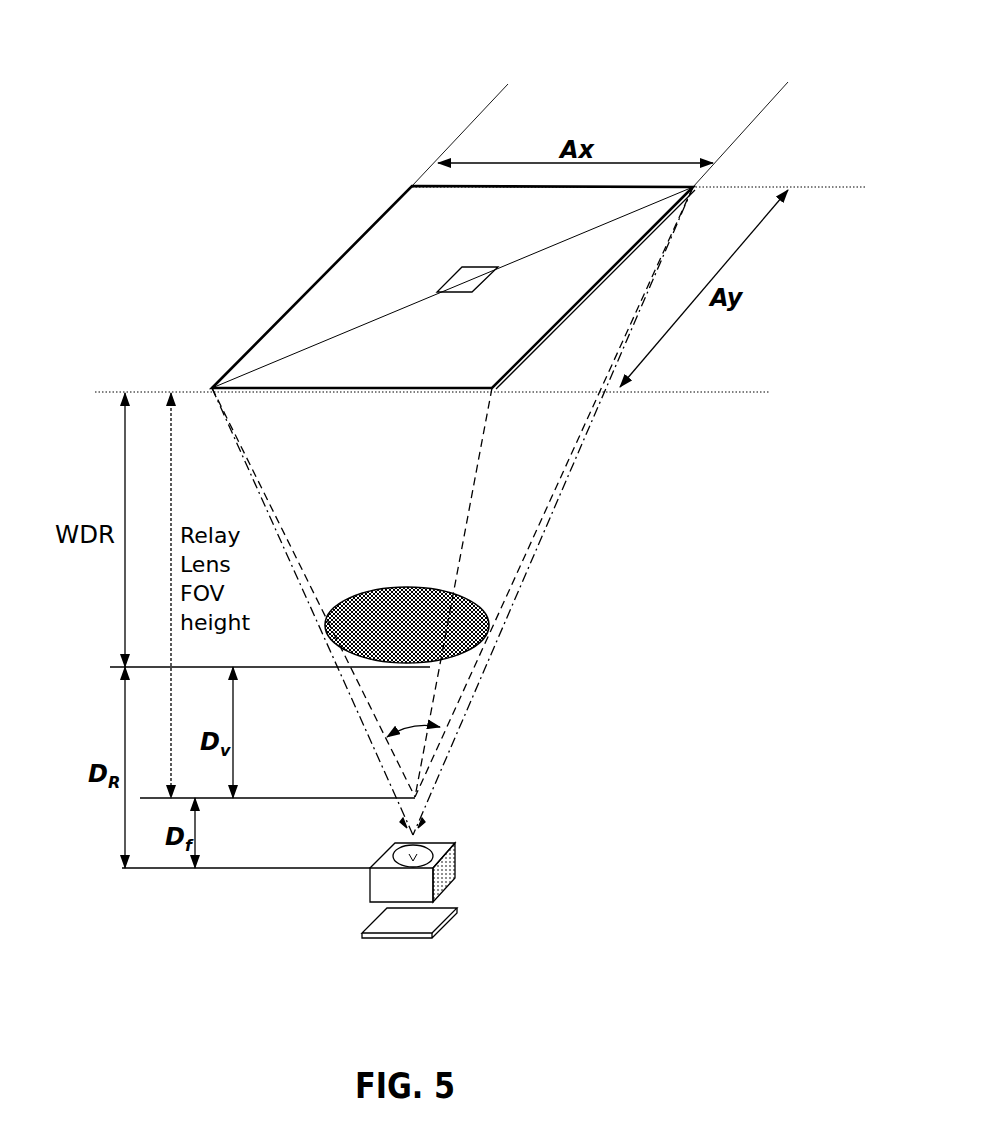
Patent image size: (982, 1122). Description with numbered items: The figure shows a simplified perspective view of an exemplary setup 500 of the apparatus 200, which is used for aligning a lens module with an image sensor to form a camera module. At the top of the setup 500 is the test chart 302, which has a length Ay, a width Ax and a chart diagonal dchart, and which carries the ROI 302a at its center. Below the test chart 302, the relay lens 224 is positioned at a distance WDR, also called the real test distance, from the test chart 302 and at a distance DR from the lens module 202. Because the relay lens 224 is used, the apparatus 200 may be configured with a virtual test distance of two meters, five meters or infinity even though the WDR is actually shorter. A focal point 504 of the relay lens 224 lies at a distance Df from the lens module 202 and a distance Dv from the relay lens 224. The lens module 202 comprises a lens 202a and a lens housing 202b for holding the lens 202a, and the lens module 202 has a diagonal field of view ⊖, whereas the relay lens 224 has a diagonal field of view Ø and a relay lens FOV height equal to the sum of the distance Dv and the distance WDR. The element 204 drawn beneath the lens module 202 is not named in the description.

The setup 500 is at (340, 170).
The test chart 302 is at (345, 273).
The ROI 302a is at (463, 287).
The apparatus 200 is at (525, 672).
The focal point 504 is at (415, 797).
The relay lens 224 is at (382, 600).
The lens module 202 is at (358, 887).
The lens 202a is at (433, 847).
The lens housing 202b is at (456, 862).
The substrate 204 is at (452, 912).